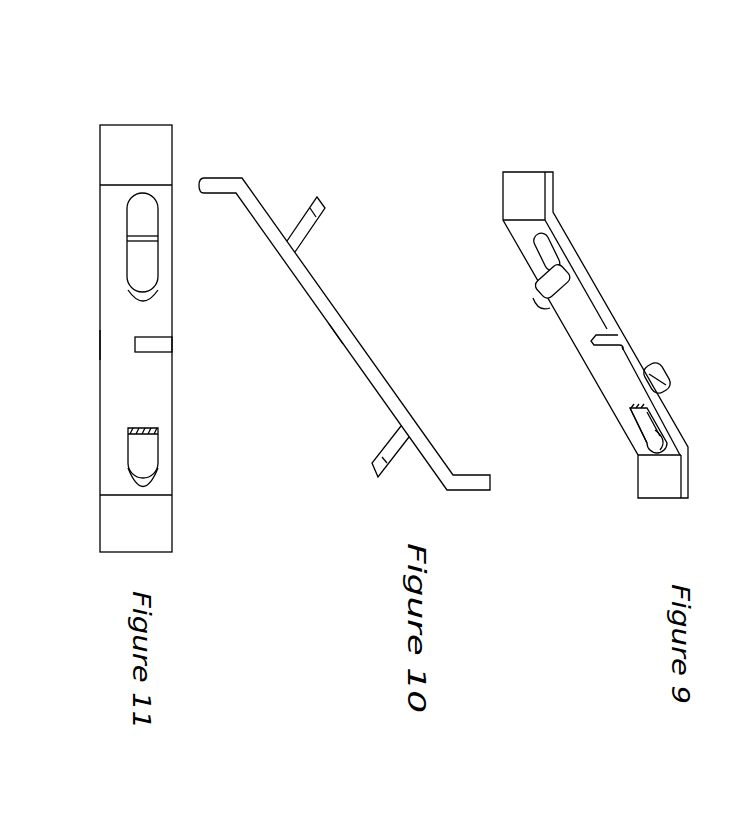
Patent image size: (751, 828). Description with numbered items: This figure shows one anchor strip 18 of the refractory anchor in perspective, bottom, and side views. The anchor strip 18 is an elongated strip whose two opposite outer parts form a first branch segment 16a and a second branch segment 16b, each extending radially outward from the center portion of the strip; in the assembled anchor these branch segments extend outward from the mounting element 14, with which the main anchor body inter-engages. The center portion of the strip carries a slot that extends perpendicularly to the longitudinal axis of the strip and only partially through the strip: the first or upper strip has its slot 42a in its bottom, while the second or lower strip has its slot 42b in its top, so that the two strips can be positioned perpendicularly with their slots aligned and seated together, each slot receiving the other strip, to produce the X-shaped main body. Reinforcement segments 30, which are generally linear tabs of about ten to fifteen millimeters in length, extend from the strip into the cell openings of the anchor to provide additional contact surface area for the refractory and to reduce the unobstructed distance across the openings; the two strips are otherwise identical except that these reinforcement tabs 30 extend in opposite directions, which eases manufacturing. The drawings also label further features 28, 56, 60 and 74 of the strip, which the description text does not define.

In FIG. 11, the mounting bracket 28 is at (133, 118).
In FIG. 9, the mounting bracket 28 is at (519, 150).
In FIG. 11, the side wall 74 is at (92, 344).
In FIG. 11, the slot 42b is at (184, 355).
In FIG. 9, the slot 42b is at (623, 327).
In FIG. 10, the anchor strip 18 is at (236, 162).
In FIG. 10, the reinforcement segment 30 is at (329, 212).
In FIG. 9, the reinforcement segment 30 is at (531, 313).
In FIG. 10, the slot 42a is at (329, 345).
In FIG. 10, the flange 56 is at (364, 478).
In FIG. 9, the second branch segment 16b is at (517, 266).
In FIG. 9, the slot 60 is at (571, 362).
In FIG. 9, the first branch segment 16a is at (617, 428).
In FIG. 9, the mounting element 14 is at (682, 373).